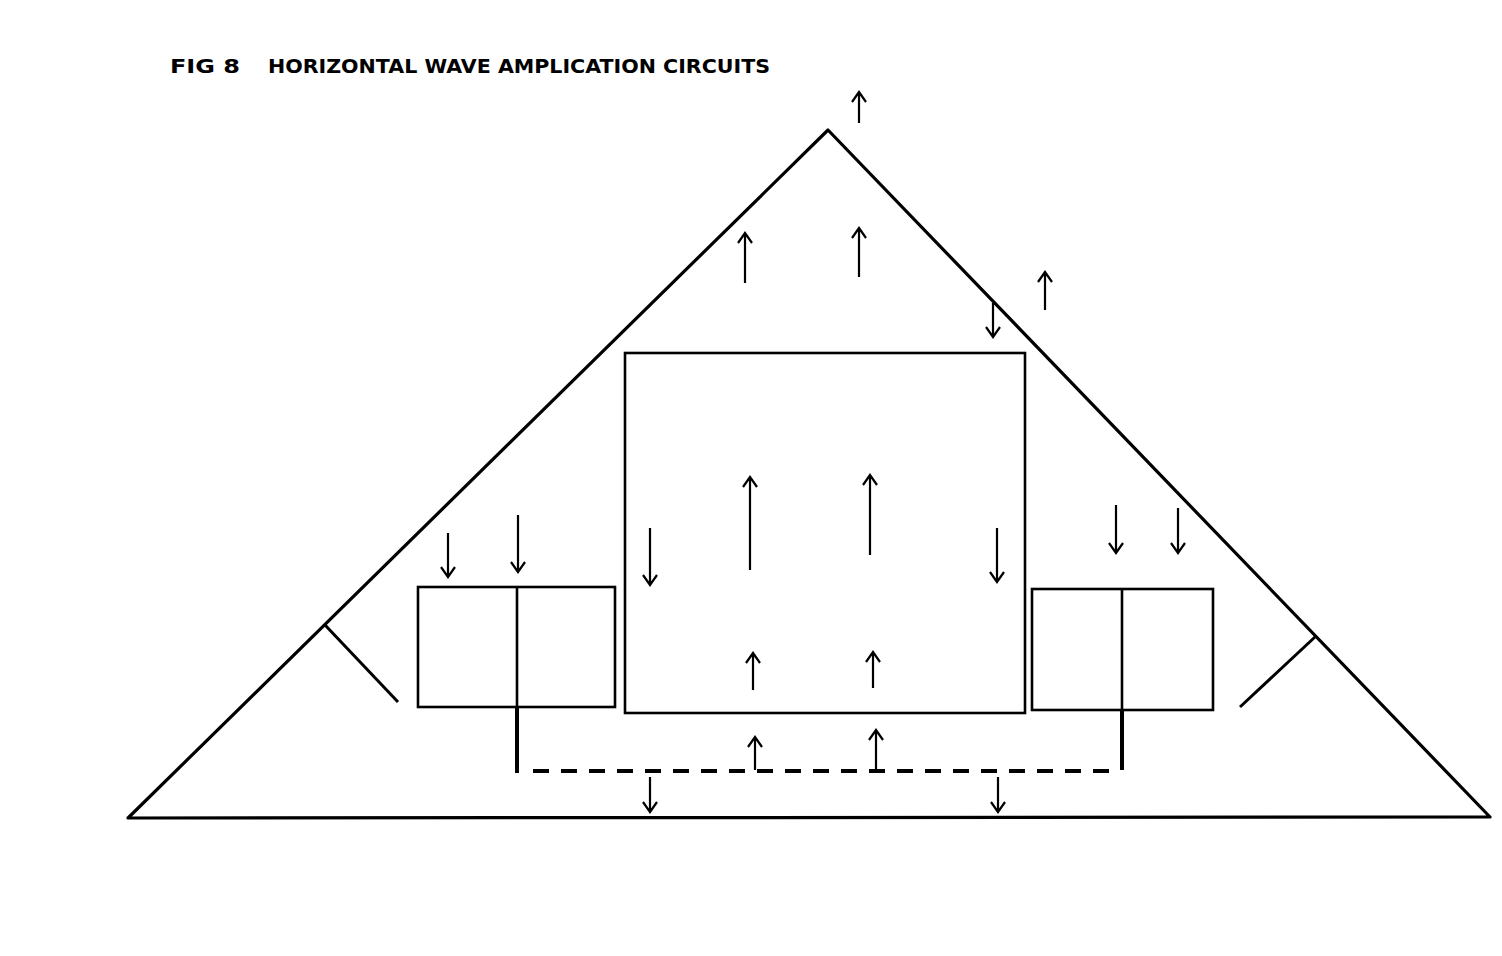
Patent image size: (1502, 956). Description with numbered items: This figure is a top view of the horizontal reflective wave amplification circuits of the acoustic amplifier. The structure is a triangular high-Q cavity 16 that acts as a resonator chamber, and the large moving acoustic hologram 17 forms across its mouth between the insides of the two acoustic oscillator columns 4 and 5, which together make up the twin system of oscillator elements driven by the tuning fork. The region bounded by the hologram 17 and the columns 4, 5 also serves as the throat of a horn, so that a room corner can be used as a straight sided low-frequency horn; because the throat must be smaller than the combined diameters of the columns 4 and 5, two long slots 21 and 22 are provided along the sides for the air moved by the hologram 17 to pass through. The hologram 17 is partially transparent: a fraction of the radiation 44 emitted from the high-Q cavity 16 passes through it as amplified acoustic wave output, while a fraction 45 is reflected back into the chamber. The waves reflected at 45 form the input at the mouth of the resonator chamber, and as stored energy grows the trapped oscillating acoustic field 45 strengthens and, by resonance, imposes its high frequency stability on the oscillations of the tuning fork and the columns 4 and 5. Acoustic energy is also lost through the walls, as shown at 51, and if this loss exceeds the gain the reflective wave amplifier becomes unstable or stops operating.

The oscillator column 4 is at (415, 645).
The oscillator column 5 is at (1218, 657).
The high-Q cavity 16 is at (809, 474).
The acoustic hologram 17 is at (821, 747).
The slot 21 is at (362, 677).
The slot 22 is at (1287, 672).
The emitted radiation 44 is at (801, 794).
The reflected oscillating acoustic field 45 is at (825, 533).
The wall energy loss 51 is at (900, 214).